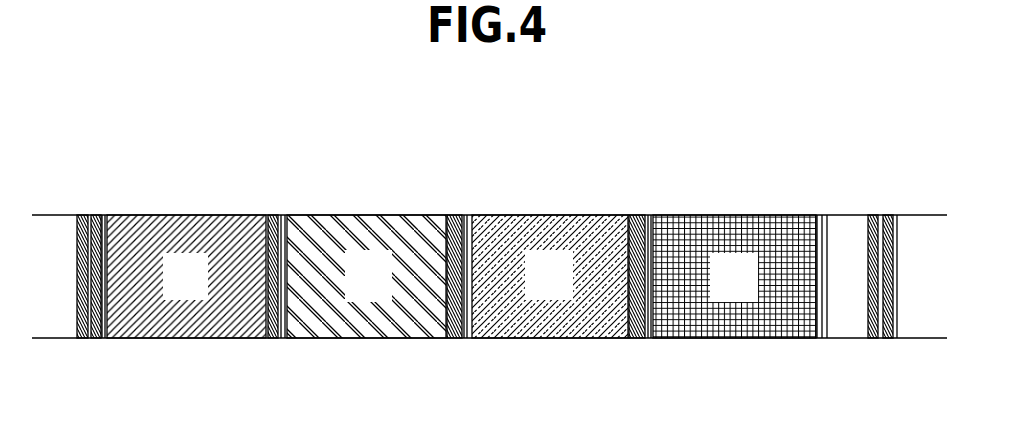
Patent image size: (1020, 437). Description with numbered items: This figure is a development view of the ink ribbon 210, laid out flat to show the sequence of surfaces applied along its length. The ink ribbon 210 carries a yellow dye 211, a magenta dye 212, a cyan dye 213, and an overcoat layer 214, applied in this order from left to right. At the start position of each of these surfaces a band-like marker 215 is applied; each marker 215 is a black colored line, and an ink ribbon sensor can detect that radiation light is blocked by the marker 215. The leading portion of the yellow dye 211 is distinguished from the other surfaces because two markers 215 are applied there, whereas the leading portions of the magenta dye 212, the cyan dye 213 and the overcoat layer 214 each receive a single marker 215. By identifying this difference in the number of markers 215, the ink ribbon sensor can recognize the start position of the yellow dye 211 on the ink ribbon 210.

The ink ribbon 210 is at (87, 175).
The yellow dye 211 is at (190, 232).
The magenta dye 212 is at (375, 235).
The cyan dye 213 is at (553, 243).
The overcoat layer 214 is at (735, 232).
The marker 215 is at (82, 338).